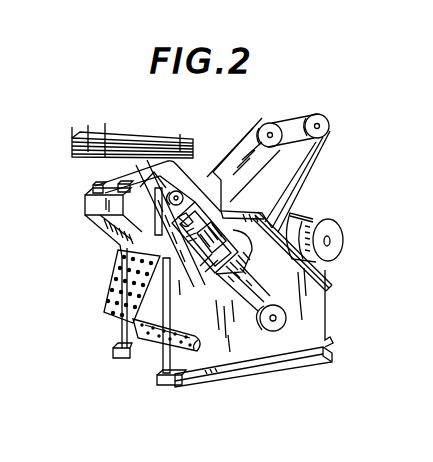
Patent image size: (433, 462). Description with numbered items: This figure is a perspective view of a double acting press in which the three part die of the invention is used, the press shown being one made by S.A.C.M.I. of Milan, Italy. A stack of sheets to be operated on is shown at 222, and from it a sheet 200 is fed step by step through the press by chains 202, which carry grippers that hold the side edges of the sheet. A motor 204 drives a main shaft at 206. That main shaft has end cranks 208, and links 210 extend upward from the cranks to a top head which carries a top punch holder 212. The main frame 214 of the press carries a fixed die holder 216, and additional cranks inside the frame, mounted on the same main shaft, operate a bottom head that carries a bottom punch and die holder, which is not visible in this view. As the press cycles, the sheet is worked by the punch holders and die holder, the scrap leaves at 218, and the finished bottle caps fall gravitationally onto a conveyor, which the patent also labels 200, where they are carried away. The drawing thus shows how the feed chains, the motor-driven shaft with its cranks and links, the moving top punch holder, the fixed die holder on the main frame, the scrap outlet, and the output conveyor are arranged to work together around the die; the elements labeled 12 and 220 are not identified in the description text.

The perforated conveyor belt 12 is at (157, 322).
The sheet 200 is at (230, 177).
The chains 202 is at (258, 125).
The motor 204 is at (315, 214).
The main shaft 206 is at (286, 311).
The end cranks 208 is at (284, 326).
The links 210 is at (226, 236).
The top punch holder 212 is at (275, 211).
The main frame 214 is at (333, 350).
The fixed die holder 216 is at (228, 258).
The scrap 218 is at (107, 314).
The support post 220 is at (192, 348).
The stack of sheets 222 is at (170, 127).